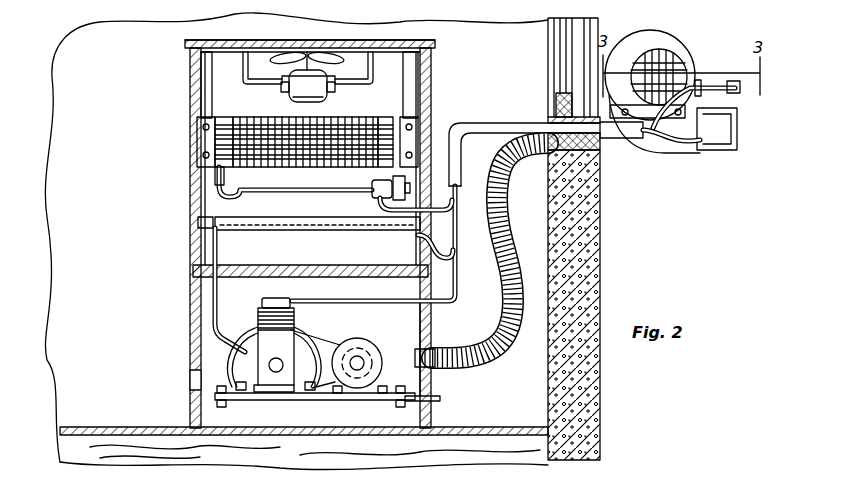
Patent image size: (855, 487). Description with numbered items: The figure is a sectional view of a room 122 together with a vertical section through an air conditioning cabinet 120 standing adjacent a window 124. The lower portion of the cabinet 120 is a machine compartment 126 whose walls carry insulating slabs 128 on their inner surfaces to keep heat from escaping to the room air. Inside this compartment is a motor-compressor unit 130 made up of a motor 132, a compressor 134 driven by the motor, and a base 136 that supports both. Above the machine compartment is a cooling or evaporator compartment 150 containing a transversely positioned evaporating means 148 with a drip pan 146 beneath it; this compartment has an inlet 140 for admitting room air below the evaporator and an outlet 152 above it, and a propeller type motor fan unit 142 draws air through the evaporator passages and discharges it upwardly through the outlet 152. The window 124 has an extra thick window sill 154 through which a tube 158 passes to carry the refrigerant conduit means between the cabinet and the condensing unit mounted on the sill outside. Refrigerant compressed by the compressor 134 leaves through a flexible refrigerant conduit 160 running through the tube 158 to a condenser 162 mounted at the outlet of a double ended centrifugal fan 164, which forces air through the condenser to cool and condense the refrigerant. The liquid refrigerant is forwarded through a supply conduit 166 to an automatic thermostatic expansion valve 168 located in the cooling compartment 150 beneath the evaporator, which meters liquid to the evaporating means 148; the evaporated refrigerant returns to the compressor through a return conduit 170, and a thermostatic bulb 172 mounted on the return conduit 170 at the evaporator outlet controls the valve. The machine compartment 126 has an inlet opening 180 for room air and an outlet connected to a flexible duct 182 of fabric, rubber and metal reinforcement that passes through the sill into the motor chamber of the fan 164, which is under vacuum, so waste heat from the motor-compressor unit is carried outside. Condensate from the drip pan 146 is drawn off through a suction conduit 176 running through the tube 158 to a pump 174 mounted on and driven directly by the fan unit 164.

The air conditioning cabinet 120 is at (190, 253).
The room 122 is at (590, 296).
The window 124 is at (565, 40).
The machine compartment 126 is at (470, 326).
The insulating slabs 128 is at (338, 258).
The motor-compressor unit 130 is at (335, 402).
The motor 132 is at (355, 342).
The compressor 134 is at (262, 313).
The base 136 is at (430, 398).
The inlet 140 is at (190, 183).
The propeller type motor fan unit 142 is at (290, 93).
The drip pan 146 is at (267, 221).
The evaporating means 148 is at (315, 158).
The cooling or evaporator compartment 150 is at (392, 90).
The outlet 152 is at (328, 41).
The extra thick window sill 154 is at (552, 110).
The tube 158 is at (462, 130).
The flexible refrigerant conduit 160 is at (355, 300).
The condenser 162 is at (740, 130).
The double ended centrifugal fan 164 is at (740, 43).
The supply conduit 166 is at (456, 208).
The automatic thermostatic expansion valve 168 is at (388, 195).
The return conduit 170 is at (218, 250).
The thermostatic bulb 172 is at (224, 176).
The pump 174 is at (712, 84).
The suction conduit 176 is at (457, 254).
The inlet opening 180 is at (190, 382).
The flexible duct 182 is at (464, 350).